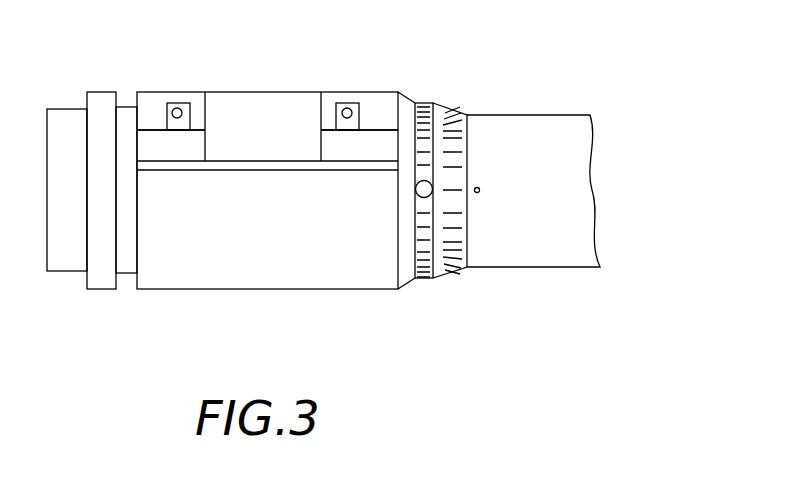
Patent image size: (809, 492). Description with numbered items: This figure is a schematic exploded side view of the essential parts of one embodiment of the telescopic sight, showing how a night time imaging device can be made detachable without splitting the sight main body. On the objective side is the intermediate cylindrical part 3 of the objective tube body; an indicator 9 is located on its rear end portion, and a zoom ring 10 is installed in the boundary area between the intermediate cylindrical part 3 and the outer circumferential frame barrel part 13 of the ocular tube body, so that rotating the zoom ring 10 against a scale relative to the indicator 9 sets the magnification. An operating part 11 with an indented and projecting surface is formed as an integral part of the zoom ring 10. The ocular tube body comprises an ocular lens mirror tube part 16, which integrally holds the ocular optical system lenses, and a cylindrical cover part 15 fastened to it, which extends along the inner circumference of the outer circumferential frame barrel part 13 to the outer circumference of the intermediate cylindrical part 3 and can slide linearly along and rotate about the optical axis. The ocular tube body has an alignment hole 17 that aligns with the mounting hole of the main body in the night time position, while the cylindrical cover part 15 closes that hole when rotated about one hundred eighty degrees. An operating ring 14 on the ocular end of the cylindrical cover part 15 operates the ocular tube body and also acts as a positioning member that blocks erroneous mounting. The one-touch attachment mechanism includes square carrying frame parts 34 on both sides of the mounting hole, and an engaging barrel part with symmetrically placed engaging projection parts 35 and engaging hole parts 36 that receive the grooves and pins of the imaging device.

The intermediate cylindrical part 3 is at (553, 258).
The indicator 9 is at (478, 193).
The zoom ring 10 is at (453, 112).
The operating part 11 is at (422, 103).
The outer circumferential frame barrel part 13 is at (207, 288).
The operating ring 14 is at (100, 282).
The cylindrical cover part 15 is at (125, 277).
The ocular lens mirror tube part 16 is at (55, 272).
The alignment hole 17 is at (255, 122).
The carrying frame parts 34 is at (285, 168).
The engaging projection parts 35 is at (165, 110).
The engaging hole parts 36 is at (178, 110).